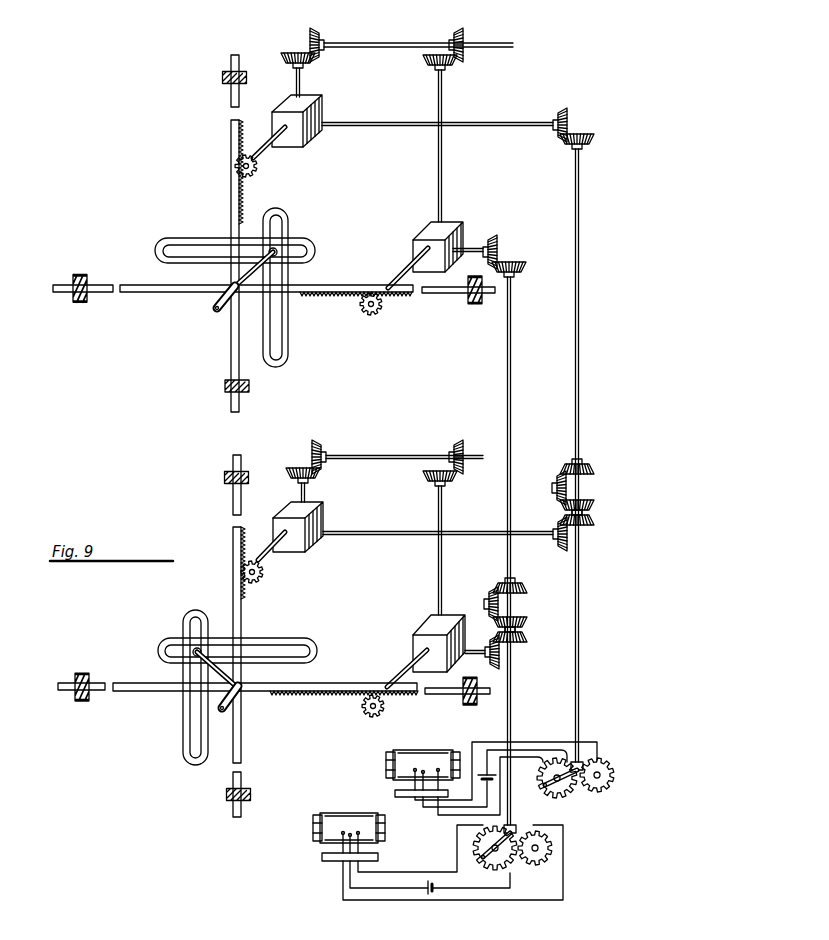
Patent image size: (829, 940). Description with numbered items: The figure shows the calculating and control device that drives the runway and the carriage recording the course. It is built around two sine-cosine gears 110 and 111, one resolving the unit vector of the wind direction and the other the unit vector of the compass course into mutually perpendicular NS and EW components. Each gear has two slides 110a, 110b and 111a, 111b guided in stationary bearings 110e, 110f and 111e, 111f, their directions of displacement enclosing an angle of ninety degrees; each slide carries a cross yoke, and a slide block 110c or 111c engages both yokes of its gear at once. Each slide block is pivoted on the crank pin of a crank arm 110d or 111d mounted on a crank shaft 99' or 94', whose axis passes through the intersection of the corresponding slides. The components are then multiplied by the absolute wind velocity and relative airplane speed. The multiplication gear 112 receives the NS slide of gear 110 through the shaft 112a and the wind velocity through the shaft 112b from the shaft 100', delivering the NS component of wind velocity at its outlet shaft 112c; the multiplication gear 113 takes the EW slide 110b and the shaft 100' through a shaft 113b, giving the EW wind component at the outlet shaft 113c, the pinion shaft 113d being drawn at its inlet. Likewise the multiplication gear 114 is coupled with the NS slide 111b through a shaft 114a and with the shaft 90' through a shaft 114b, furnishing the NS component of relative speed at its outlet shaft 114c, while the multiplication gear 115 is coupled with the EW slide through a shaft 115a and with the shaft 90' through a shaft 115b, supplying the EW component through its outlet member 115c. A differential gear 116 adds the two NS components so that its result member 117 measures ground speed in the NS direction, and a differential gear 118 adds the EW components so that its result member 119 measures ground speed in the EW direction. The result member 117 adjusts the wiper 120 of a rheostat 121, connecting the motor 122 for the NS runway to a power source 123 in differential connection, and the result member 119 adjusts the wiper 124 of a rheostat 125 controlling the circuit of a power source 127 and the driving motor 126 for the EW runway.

The shaft 100' is at (418, 30).
The shaft 90' is at (404, 443).
The crank shaft 99' is at (182, 315).
The crank shaft 94' is at (253, 706).
The sine-cosine gear 110 is at (177, 207).
The slide 110a is at (231, 338).
The slide 110b is at (155, 290).
The slide block 110c is at (278, 248).
The crank arm 110d is at (258, 268).
The stationary bearing 110e is at (222, 78).
The stationary bearing 110f is at (77, 273).
The sine-cosine gear 111 is at (125, 635).
The slide 111a is at (242, 742).
The slide 111b is at (152, 692).
The slide block 111c is at (185, 645).
The crank arm 111d is at (232, 672).
The stationary bearing 111e is at (225, 478).
The stationary bearing 111f is at (80, 674).
The multiplication gear 112 is at (318, 104).
The shaft 112a is at (263, 163).
The shaft 112b is at (302, 80).
The outlet shaft 112c is at (383, 127).
The multiplication gear 113 is at (447, 235).
The shaft 113b is at (444, 152).
The outlet shaft 113c is at (480, 247).
The pinion shaft 113d is at (400, 280).
The multiplication gear 114 is at (322, 507).
The shaft 114a is at (265, 564).
The shaft 114b is at (308, 482).
The outlet shaft 114c is at (395, 537).
The multiplication gear 115 is at (430, 620).
The shaft 115a is at (395, 678).
The shaft 115b is at (443, 574).
The outlet member 115c is at (474, 645).
The differential gear 116 is at (508, 610).
The result member 117 is at (513, 681).
The differential gear 118 is at (580, 488).
The result member 119 is at (580, 620).
The wiper 120 is at (515, 832).
The rheostat 121 is at (553, 845).
The motor 122 is at (348, 813).
The power source 123 is at (435, 895).
The wiper 124 is at (583, 790).
The rheostat 125 is at (622, 755).
The driving motor 126 is at (420, 750).
The power source 127 is at (486, 742).